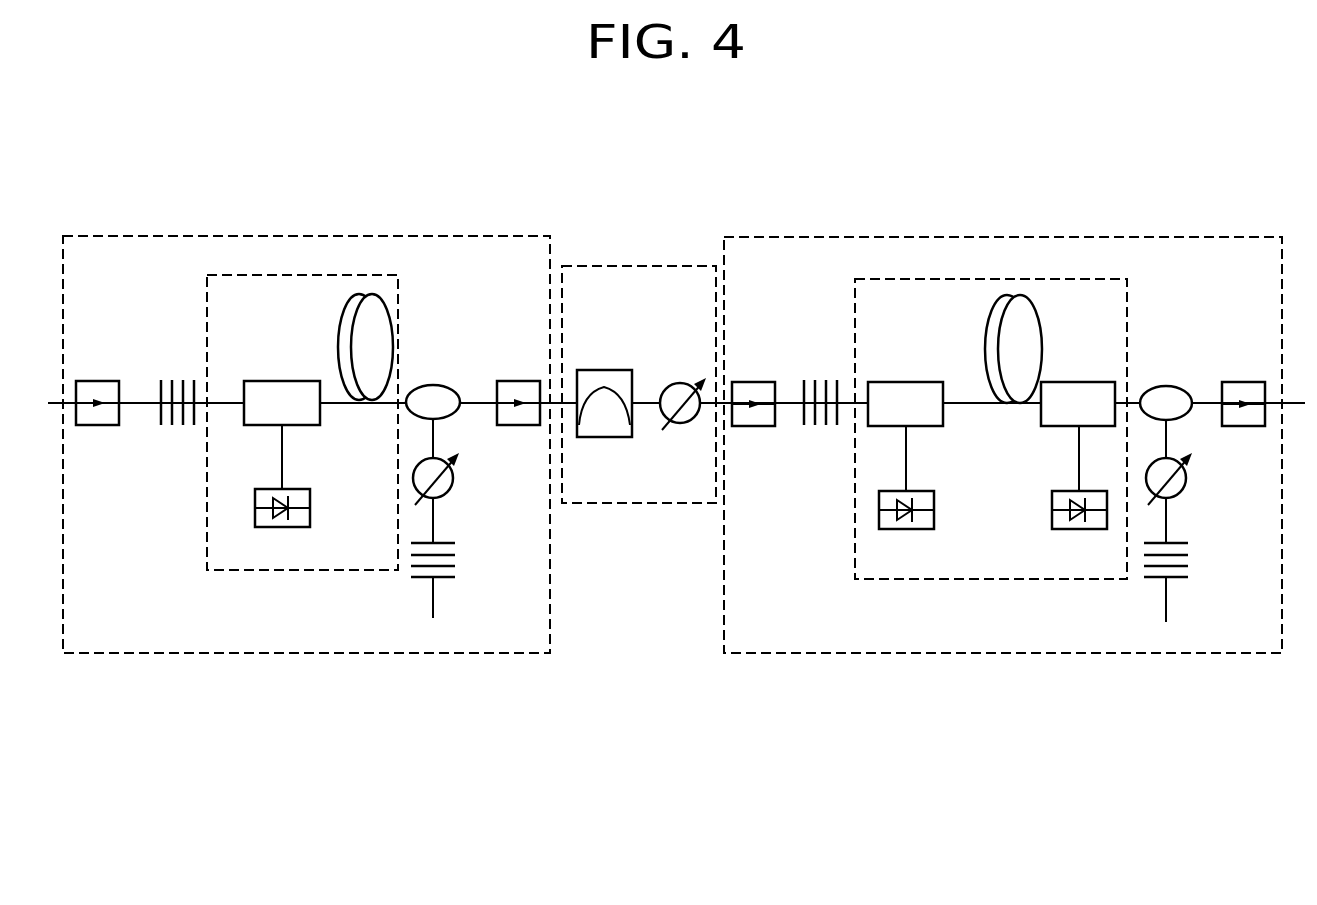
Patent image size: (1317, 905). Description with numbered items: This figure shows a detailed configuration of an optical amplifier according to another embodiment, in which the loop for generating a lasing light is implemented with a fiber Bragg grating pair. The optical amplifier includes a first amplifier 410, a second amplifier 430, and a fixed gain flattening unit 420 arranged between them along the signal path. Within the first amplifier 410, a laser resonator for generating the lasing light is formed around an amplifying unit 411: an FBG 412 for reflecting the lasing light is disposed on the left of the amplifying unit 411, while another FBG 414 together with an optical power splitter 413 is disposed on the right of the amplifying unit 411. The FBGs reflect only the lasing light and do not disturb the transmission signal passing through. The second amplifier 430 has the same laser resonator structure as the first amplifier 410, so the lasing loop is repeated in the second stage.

The first amplifier 410 is at (308, 236).
The amplifying unit 411 is at (207, 319).
The FBG 412 is at (167, 427).
The optical power splitter 413 is at (433, 385).
The FBG 414 is at (455, 566).
The fixed gain flattening unit 420 is at (637, 266).
The second amplifier 430 is at (1003, 237).